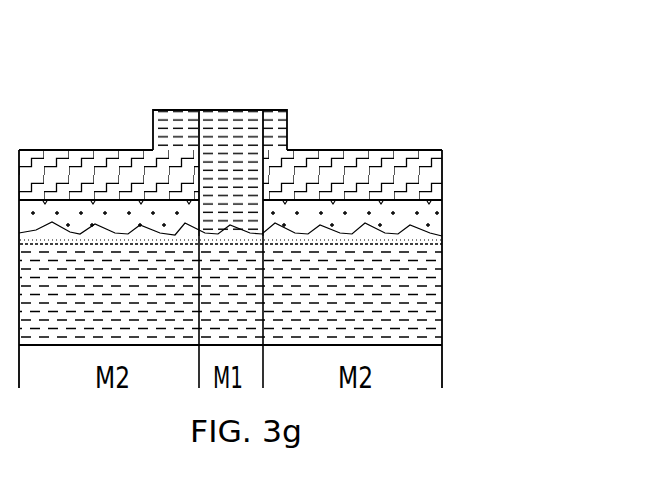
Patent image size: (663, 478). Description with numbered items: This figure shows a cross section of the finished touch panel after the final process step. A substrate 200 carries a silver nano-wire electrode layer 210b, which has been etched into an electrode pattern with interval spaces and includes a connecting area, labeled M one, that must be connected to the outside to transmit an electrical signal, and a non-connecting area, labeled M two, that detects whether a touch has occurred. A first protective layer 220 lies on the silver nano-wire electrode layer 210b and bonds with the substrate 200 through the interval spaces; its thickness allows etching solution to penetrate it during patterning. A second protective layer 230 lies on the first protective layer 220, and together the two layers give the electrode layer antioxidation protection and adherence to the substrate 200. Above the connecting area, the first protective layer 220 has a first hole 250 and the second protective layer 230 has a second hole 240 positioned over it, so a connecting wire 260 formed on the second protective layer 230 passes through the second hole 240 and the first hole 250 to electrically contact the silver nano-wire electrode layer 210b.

The substrate 200 is at (422, 293).
The silver nano-wire electrode layer 210b is at (443, 237).
The first protective layer 220 is at (420, 207).
The second protective layer 230 is at (413, 153).
The second hole 240 is at (218, 173).
The first hole 250 is at (233, 210).
The connecting wire 260 is at (228, 127).